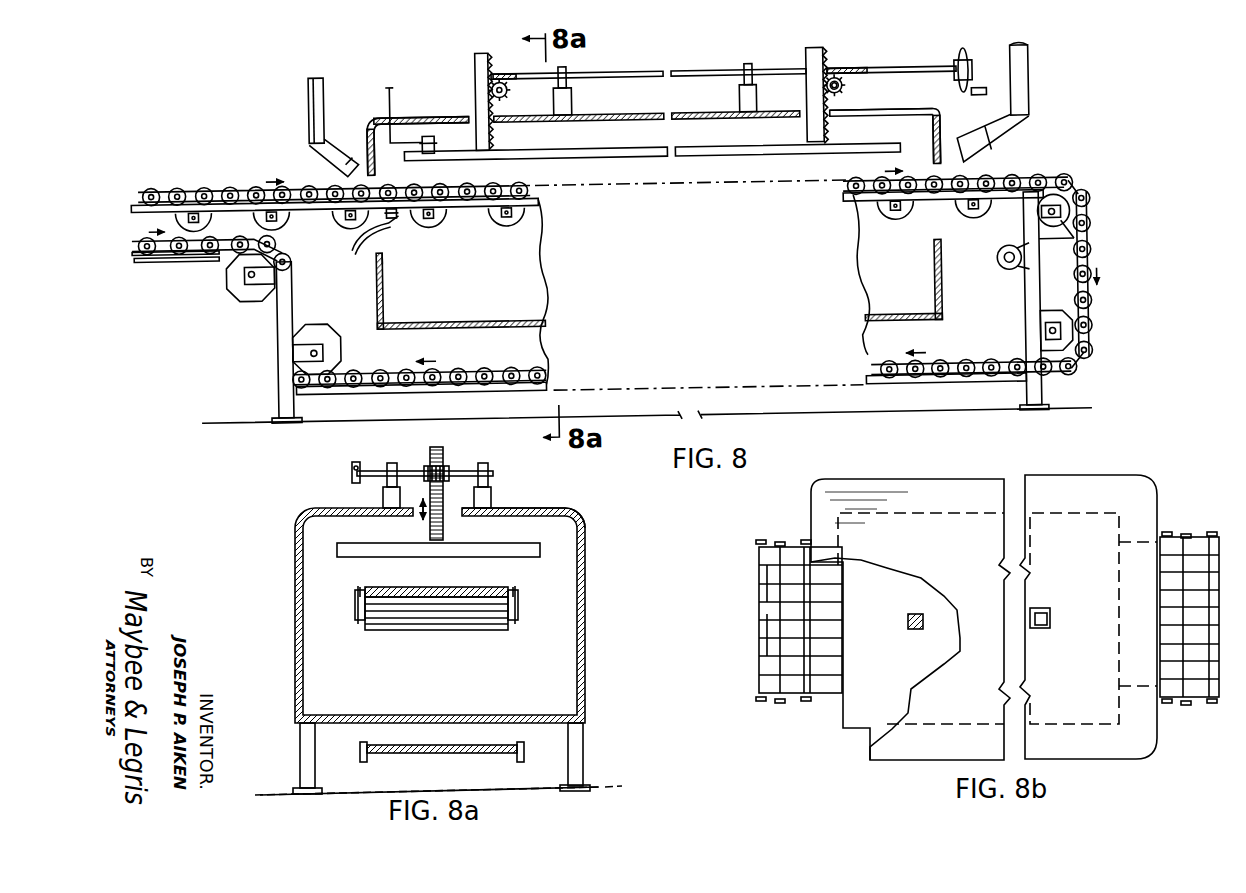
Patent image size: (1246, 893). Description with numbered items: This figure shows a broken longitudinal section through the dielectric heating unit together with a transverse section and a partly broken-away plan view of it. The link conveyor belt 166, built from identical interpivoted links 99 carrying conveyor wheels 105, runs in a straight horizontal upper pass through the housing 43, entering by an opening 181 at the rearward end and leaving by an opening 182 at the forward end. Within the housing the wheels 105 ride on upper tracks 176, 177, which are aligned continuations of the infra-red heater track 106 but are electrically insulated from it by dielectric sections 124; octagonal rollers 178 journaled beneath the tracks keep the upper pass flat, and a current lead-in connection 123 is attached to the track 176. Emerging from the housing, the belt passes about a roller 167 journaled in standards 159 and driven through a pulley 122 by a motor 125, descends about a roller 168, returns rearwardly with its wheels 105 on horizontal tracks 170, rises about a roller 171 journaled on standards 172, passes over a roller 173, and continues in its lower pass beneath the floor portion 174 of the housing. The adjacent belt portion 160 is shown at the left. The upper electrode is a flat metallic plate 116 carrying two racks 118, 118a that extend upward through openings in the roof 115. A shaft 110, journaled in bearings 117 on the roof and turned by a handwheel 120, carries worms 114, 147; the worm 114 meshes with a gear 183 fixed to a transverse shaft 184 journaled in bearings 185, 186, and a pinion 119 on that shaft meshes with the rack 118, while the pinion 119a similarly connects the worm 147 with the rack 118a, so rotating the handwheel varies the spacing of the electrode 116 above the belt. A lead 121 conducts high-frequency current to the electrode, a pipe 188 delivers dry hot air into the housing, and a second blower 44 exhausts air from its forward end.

In FIG. 8, the housing 43 is at (462, 97).
In FIG. 8A, the housing 43 is at (293, 566).
In FIG. 8, the second blower 44 is at (1035, 74).
In FIG. 8B, the links 99 is at (764, 614).
In FIG. 8, the conveyor wheels 105 is at (379, 365).
In FIG. 8A, the conveyor wheels 105 is at (515, 590).
In FIG. 8B, the conveyor wheels 105 is at (759, 540).
In FIG. 8, the upper track 106 is at (150, 182).
In FIG. 8, the shaft 110 is at (618, 71).
In FIG. 8A, the shaft 110 is at (356, 462).
In FIG. 8, the worm 114 is at (841, 70).
In FIG. 8, the roof 115 is at (915, 121).
In FIG. 8A, the roof 115 is at (580, 516).
In FIG. 8B, the roof 115 is at (1078, 482).
In FIG. 8, the upper electrode plate 116 is at (770, 152).
In FIG. 8A, the upper electrode plate 116 is at (487, 545).
In FIG. 8B, the upper electrode plate 116 is at (910, 619).
In FIG. 8, the bearings 117 is at (575, 99).
In FIG. 8, the rack 118 is at (823, 51).
In FIG. 8A, the rack 118 is at (444, 451).
In FIG. 8B, the rack 118 is at (908, 619).
In FIG. 8, the rack 118a is at (485, 51).
In FIG. 8, the pinion 119 is at (846, 98).
In FIG. 8A, the pinion 119 is at (427, 468).
In FIG. 8, the pinion 119a is at (505, 100).
In FIG. 8, the handwheel 120 is at (962, 88).
In FIG. 8, the lead 121 is at (397, 86).
In FIG. 8, the pulley 122 is at (1040, 246).
In FIG. 8, the current lead-in connection 123 is at (357, 250).
In FIG. 8, the dielectric section 124 is at (322, 198).
In FIG. 8, the motor 125 is at (998, 268).
In FIG. 8, the worm 147 is at (515, 87).
In FIG. 8, the standard 159 is at (1040, 397).
In FIG. 8, the feed conveyor 160 is at (175, 256).
In FIG. 8, the link conveyor belt 166 is at (216, 171).
In FIG. 8A, the link conveyor belt 166 is at (447, 585).
In FIG. 8B, the link conveyor belt 166 is at (754, 650).
In FIG. 8, the roller 167 is at (1090, 225).
In FIG. 8, the roller 168 is at (1072, 346).
In FIG. 8, the horizontal tracks 170 is at (395, 389).
In FIG. 8A, the horizontal tracks 170 is at (370, 756).
In FIG. 8, the roller 171 is at (330, 338).
In FIG. 8, the standard 172 is at (277, 319).
In FIG. 8A, the standard 172 is at (300, 750).
In FIG. 8, the roller 173 is at (232, 280).
In FIG. 8, the floor portion 174 is at (450, 319).
In FIG. 8, the upper track 176 is at (470, 208).
In FIG. 8A, the upper track 176 is at (518, 603).
In FIG. 8A, the upper track 177 is at (353, 605).
In FIG. 8, the rollers 178 is at (507, 222).
In FIG. 8A, the rollers 178 is at (472, 612).
In FIG. 8, the opening 181 is at (388, 247).
In FIG. 8, the opening 182 is at (941, 245).
In FIG. 8, the gear 183 is at (850, 90).
In FIG. 8A, the shaft 184 is at (356, 484).
In FIG. 8A, the bearing 185 is at (392, 506).
In FIG. 8A, the bearing 186 is at (490, 496).
In FIG. 8, the pipe 188 is at (335, 128).